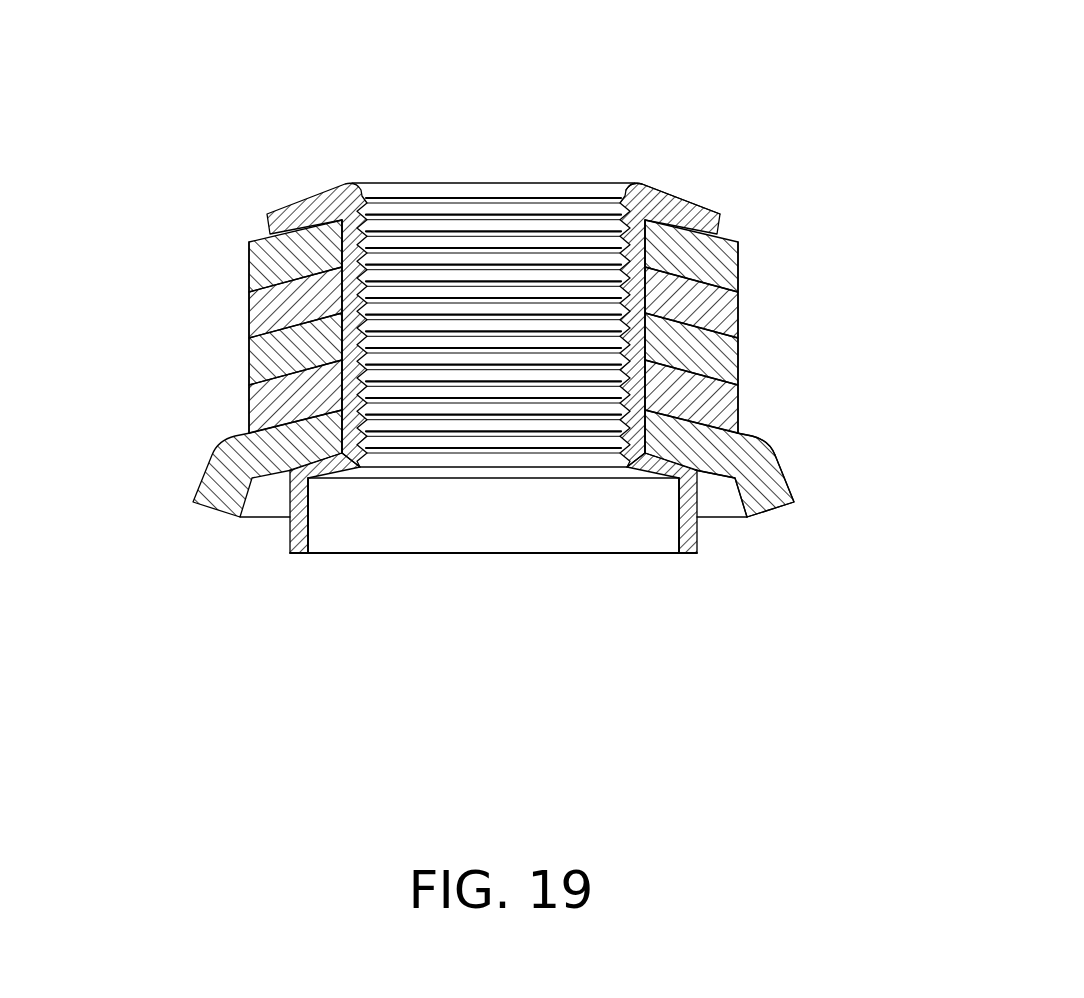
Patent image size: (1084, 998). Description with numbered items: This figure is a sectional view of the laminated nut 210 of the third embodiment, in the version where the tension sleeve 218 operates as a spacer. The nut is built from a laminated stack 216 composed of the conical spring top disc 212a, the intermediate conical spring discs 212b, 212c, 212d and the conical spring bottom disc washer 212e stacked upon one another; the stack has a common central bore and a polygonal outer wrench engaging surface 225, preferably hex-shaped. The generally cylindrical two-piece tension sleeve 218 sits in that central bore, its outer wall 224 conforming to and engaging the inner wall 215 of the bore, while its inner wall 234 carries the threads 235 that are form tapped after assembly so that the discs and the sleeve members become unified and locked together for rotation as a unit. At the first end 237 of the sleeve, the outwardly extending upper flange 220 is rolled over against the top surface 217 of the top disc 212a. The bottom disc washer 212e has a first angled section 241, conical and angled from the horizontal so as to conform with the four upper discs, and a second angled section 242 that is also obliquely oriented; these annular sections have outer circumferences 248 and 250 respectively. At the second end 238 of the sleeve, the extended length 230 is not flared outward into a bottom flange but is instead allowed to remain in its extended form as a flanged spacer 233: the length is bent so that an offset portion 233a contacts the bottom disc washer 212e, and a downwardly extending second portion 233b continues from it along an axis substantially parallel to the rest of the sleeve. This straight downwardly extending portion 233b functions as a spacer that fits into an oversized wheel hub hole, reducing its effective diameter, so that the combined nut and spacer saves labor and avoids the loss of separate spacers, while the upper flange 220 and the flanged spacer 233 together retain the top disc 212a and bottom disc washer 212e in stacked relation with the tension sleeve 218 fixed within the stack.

The laminated nut 210 is at (192, 281).
The laminated stack 216 is at (240, 244).
The first end 237 is at (298, 208).
The tension sleeve 218 is at (348, 182).
The threads 235 is at (467, 232).
The outer wall 224 is at (607, 228).
The upper flange 220 is at (670, 193).
The top surface 217 is at (736, 232).
The top disc 212a is at (740, 267).
The conical spring disc 212b is at (740, 312).
The conical spring disc 212c is at (740, 365).
The conical spring disc 212d is at (740, 400).
The bottom disc washer 212e is at (745, 490).
The outer circumference 248 is at (745, 438).
The outer circumference 250 is at (773, 510).
The second angled section 242 is at (213, 505).
The first angled section 241 is at (270, 472).
The second end 238 is at (302, 555).
The flanged spacer 233 is at (320, 515).
The inner wall 234 is at (458, 520).
The inner wall 215 is at (623, 430).
The offset portion 233a is at (660, 530).
The extended length 230 is at (662, 547).
The downwardly extending second portion 233b is at (700, 540).
The polygonal outer wrench engaging surface 225 is at (250, 340).